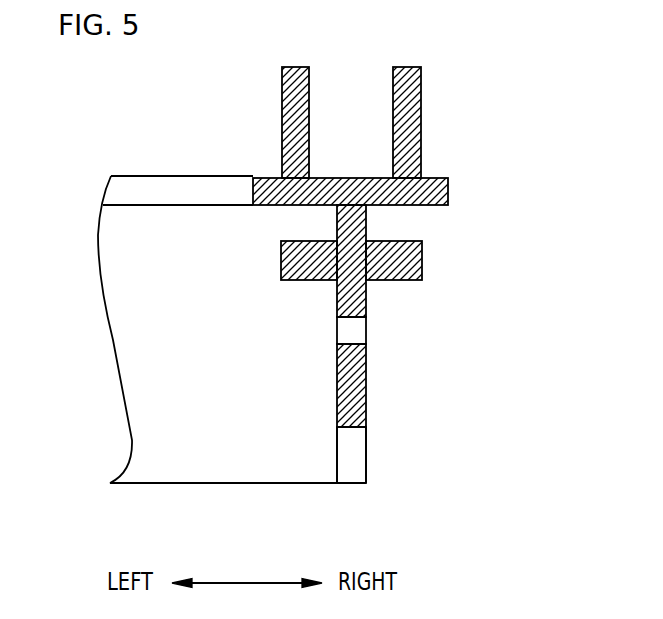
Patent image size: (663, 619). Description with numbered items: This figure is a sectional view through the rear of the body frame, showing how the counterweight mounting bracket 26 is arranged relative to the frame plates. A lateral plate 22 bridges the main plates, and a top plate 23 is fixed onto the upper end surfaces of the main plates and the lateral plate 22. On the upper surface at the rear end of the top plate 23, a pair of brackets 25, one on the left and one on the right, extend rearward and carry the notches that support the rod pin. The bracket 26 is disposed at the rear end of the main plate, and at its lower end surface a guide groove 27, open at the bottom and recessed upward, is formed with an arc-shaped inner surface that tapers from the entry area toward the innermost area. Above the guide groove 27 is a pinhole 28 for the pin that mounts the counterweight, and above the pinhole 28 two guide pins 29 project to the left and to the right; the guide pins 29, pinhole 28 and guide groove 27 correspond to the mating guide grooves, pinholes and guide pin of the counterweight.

The lateral plate 22 is at (240, 466).
The top plate 23 is at (432, 184).
The bracket 25 is at (421, 90).
The bracket 26 is at (366, 224).
The guide groove 27 is at (345, 428).
The pinhole 28 is at (346, 342).
The guide pin 29 is at (472, 268).